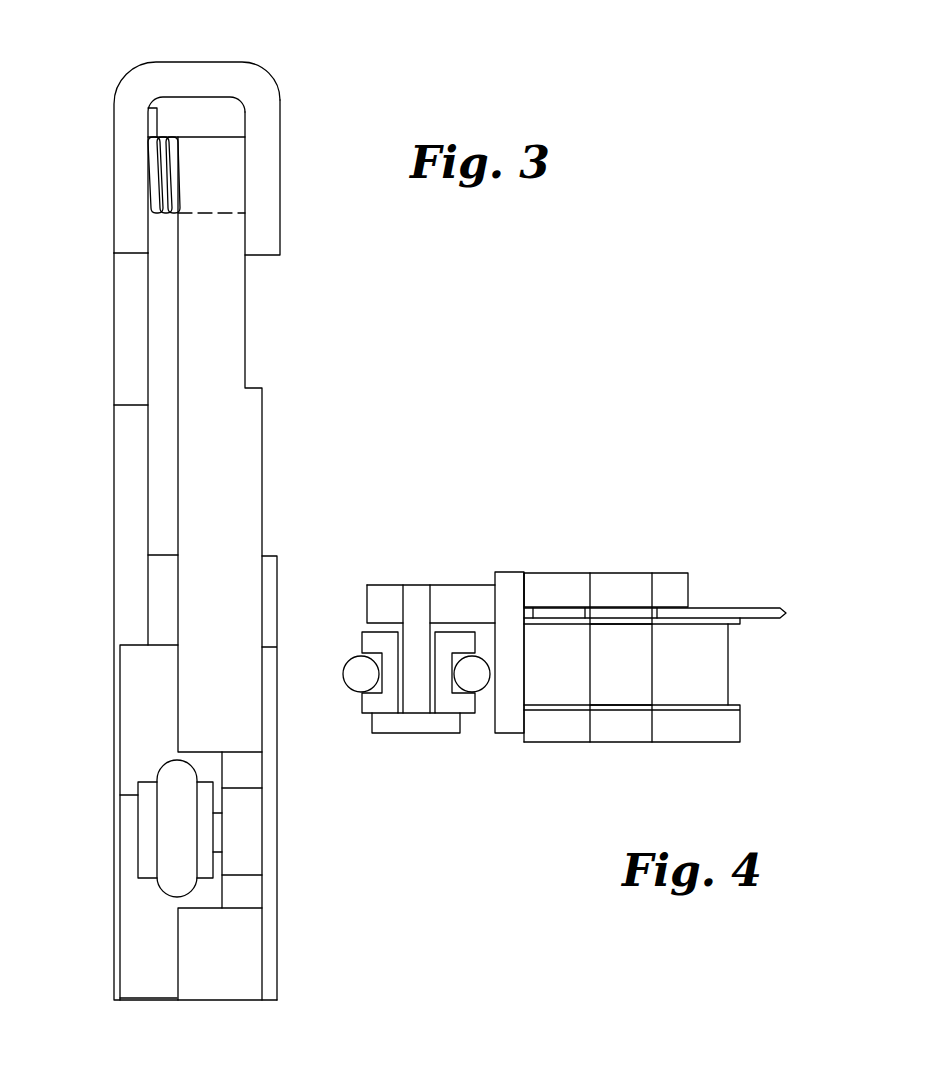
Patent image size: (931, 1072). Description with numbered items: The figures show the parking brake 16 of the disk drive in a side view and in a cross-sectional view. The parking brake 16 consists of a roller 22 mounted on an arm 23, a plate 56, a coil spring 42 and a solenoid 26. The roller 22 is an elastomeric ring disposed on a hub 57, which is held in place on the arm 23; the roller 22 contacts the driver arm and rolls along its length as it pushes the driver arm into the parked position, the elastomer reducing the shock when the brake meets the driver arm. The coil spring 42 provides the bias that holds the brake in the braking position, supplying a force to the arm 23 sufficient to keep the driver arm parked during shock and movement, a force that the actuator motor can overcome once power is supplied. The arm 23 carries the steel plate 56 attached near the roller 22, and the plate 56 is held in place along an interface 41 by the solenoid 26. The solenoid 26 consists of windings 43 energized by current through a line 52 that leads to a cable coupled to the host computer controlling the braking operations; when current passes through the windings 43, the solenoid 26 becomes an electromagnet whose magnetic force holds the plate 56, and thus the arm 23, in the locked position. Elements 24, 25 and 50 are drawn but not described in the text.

In FIG. 3, the parking brake 16 is at (108, 477).
In FIG. 3, the roller 22 is at (175, 815).
In FIG. 4, the roller 22 is at (357, 683).
In FIG. 3, the arm 23 is at (245, 437).
In FIG. 3, the hook arm 24 is at (273, 173).
In FIG. 3, the hook arm 25 is at (110, 175).
In FIG. 4, the solenoid 26 is at (572, 568).
In FIG. 4, the interface 41 is at (523, 572).
In FIG. 3, the coil spring 42 is at (166, 137).
In FIG. 4, the windings 43 is at (688, 690).
In FIG. 3, the bracket 50 is at (145, 853).
In FIG. 4, the bracket 50 is at (420, 727).
In FIG. 4, the line 52 is at (727, 610).
In FIG. 3, the plate 56 is at (140, 975).
In FIG. 4, the plate 56 is at (510, 577).
In FIG. 3, the hub 57 is at (208, 863).
In FIG. 4, the hub 57 is at (380, 640).